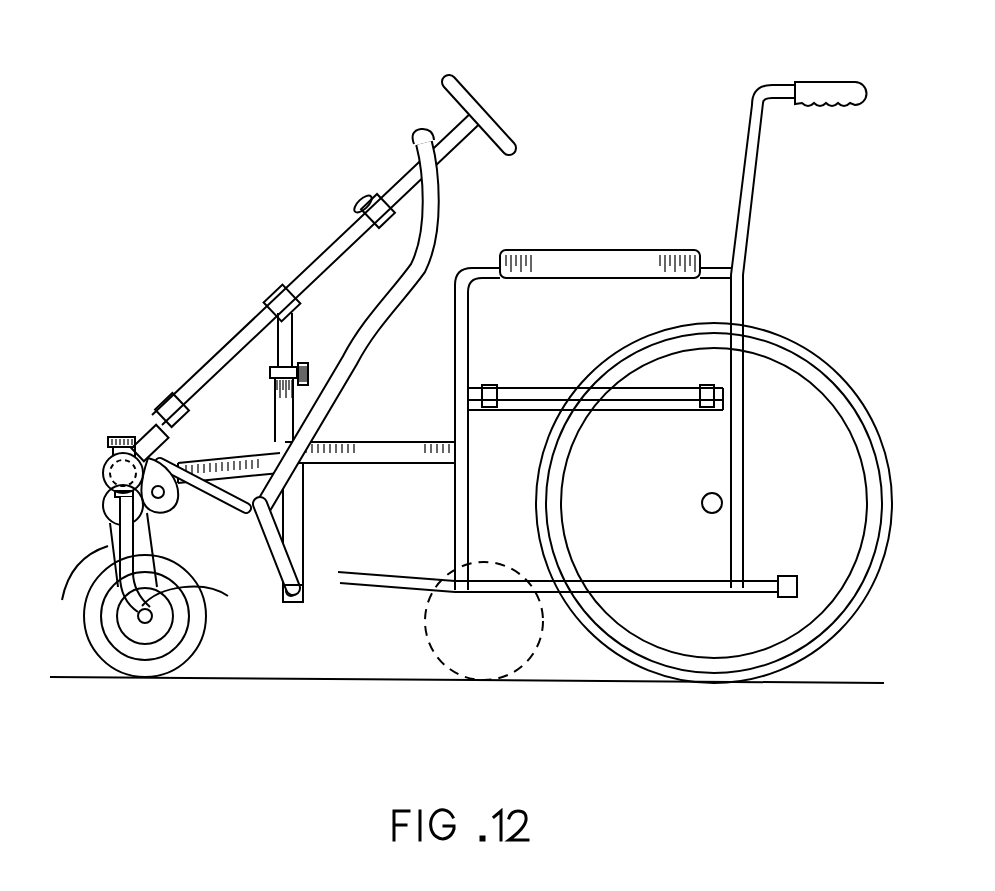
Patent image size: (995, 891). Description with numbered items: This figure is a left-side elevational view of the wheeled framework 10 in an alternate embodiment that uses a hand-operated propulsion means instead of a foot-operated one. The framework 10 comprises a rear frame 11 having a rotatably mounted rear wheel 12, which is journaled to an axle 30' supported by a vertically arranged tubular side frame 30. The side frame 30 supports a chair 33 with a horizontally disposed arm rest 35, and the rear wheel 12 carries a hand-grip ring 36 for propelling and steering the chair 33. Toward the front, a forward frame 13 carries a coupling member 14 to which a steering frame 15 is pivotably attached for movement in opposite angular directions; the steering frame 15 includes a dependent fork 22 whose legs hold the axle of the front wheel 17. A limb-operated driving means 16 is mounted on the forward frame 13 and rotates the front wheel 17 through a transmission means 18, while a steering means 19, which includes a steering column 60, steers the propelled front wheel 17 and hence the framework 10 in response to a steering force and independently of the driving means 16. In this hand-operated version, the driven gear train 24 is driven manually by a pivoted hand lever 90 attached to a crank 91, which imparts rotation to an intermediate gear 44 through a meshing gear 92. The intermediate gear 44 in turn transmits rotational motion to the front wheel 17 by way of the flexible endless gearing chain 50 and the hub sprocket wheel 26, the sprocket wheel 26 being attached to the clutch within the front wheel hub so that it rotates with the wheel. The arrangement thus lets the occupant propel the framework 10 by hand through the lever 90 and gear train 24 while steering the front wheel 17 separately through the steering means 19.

The wheeled framework 10 is at (593, 162).
The rear frame 11 is at (414, 476).
The rear wheel 12 is at (818, 365).
The forward frame 13 is at (222, 447).
The coupling member 14 is at (118, 440).
The steering frame 15 is at (106, 536).
The limb-operated driving means 16 is at (462, 210).
The front wheel 17 is at (192, 628).
The transmission means 18 is at (96, 460).
The steering means 19 is at (473, 74).
The fork 22 is at (200, 605).
The driven gear train 24 is at (95, 515).
The sprocket wheel 26 is at (148, 628).
The tubular side frame 30 is at (799, 335).
The axle 30' is at (668, 491).
The chair 33 is at (445, 378).
The arm rest 35 is at (618, 262).
The hand-grip ring 36 is at (637, 370).
The intermediate gear 44 is at (152, 496).
The gearing chain 50 is at (62, 600).
The steering column 60 is at (318, 268).
The hand lever 90 is at (446, 236).
The crank 91 is at (280, 524).
The meshing gear 92 is at (166, 505).